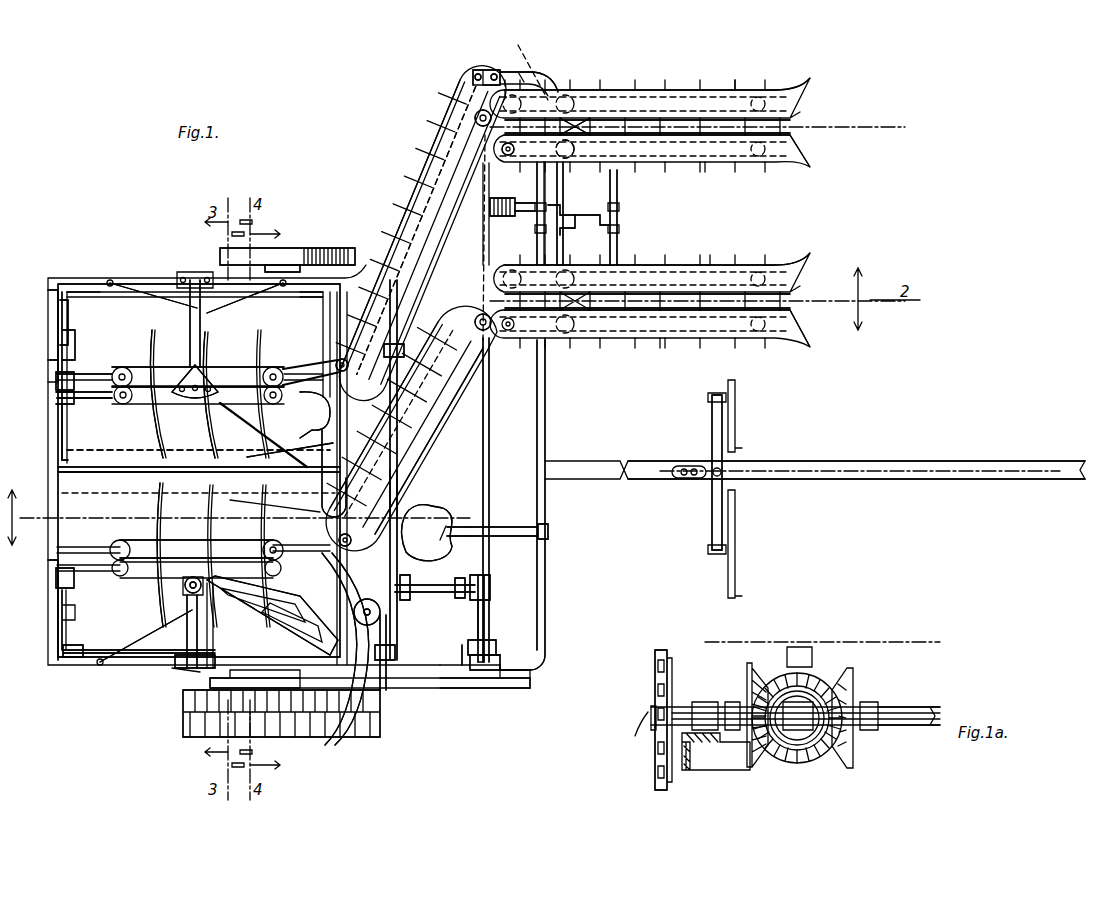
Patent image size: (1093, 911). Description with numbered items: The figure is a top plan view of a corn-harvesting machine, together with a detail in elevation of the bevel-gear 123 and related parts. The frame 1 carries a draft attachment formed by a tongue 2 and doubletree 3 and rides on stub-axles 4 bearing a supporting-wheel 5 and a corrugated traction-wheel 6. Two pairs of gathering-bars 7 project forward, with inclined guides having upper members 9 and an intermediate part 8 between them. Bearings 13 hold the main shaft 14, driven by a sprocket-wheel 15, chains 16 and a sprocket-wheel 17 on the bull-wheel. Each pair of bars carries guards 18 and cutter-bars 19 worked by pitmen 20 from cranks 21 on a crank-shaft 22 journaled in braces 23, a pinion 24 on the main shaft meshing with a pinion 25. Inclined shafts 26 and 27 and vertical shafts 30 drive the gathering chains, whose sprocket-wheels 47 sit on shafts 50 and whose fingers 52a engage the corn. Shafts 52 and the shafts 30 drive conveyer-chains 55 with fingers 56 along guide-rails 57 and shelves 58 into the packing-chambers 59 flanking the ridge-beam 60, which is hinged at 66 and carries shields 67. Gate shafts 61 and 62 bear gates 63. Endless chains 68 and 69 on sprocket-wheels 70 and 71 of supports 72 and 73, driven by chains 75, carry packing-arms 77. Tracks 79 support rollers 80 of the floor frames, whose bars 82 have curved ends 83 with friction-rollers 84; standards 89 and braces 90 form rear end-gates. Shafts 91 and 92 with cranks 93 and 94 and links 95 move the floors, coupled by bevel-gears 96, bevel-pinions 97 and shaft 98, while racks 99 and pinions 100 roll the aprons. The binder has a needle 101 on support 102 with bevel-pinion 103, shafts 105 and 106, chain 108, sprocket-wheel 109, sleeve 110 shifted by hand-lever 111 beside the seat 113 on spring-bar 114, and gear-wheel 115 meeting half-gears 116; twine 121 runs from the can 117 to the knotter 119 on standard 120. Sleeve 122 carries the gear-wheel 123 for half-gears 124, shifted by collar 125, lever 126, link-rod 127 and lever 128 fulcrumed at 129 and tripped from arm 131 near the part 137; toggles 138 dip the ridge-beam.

In FIG. 1, the frame 1 is at (546, 432).
In FIG. 1A, the frame 1 is at (690, 770).
In FIG. 1, the tongue 2 is at (826, 462).
In FIG. 1, the doubletree 3 is at (710, 438).
In FIG. 1, the stub-axles 4 is at (286, 268).
In FIG. 1, the supporting-wheel 5 is at (335, 250).
In FIG. 1, the traction-wheel 6 is at (308, 730).
In FIG. 1, the gathering-bars 7 is at (812, 86).
In FIG. 1, the conveyor frame 8 is at (658, 118).
In FIG. 1, the upper members of inclined guides 9 is at (647, 212).
In FIG. 1, the boxes or bearings 13 is at (488, 70).
In FIG. 1A, the boxes or bearings 13 is at (702, 702).
In FIG. 1, the main shaft 14 is at (490, 462).
In FIG. 1A, the main shaft 14 is at (904, 707).
In FIG. 1, the sprocket-wheel 15 is at (512, 680).
In FIG. 1A, the sprocket-wheel 15 is at (650, 750).
In FIG. 1, the chains 16 is at (500, 688).
In FIG. 1, the sprocket-wheel 17 is at (190, 678).
In FIG. 1, the guards 18 is at (585, 138).
In FIG. 1, the reciprocating cutter-bars 19 is at (516, 149).
In FIG. 1, the pitmen 20 is at (565, 180).
In FIG. 1, the cranks 21 is at (572, 225).
In FIG. 1, the crank-shaft 22 is at (575, 220).
In FIG. 1, the braces 23 is at (618, 192).
In FIG. 1, the pinion 24 is at (500, 198).
In FIG. 1, the pinion 25 is at (502, 218).
In FIG. 1, the inclined shafts 26 is at (552, 85).
In FIG. 1, the inclined shafts 27 is at (570, 160).
In FIG. 1, the vertical shafts 30 is at (472, 116).
In FIG. 1, the sprocket-wheels 47 is at (503, 360).
In FIG. 1, the shafts 50 is at (522, 75).
In FIG. 1, the shafts 52 is at (338, 538).
In FIG. 1, the laterally-extending fingers 52a is at (735, 88).
In FIG. 1, the endless conveyer-chains 55 is at (426, 170).
In FIG. 1, the fingers 56 is at (416, 192).
In FIG. 1, the guide-rails 57 is at (438, 230).
In FIG. 1, the supporting-shelves 58 is at (425, 262).
In FIG. 1, the packing-chambers 59 is at (199, 470).
In FIG. 1, the ridge-beam 60 is at (125, 474).
In FIG. 1, the vertical shaft 61 is at (399, 497).
In FIG. 1, the vertical shaft 62 is at (318, 430).
In FIG. 1, the gates 63 is at (300, 455).
In FIG. 1, the hinge 66 is at (402, 322).
In FIG. 1, the shields 67 is at (180, 484).
In FIG. 1, the endless chains 68 is at (160, 430).
In FIG. 1, the endless chains 69 is at (160, 365).
In FIG. 1, the sprocket-wheels 70 is at (135, 400).
In FIG. 1, the sprocket-wheels 71 is at (124, 367).
In FIG. 1, the vertical supports 72 is at (280, 405).
In FIG. 1, the vertical supports 73 is at (122, 405).
In FIG. 1, the chains 75 is at (290, 510).
In FIG. 1, the pivoted packing-arms 77 is at (100, 395).
In FIG. 1, the tracks 79 is at (55, 300).
In FIG. 1, the rollers or wheels 80 is at (56, 378).
In FIG. 1, the bars 82 is at (60, 410).
In FIG. 1, the downwardly-curved outer ends 83 is at (60, 345).
In FIG. 1, the friction-rollers 84 is at (52, 358).
In FIG. 1, the standards 89 is at (68, 368).
In FIG. 1, the cross pieces or braces 90 is at (62, 452).
In FIG. 1, the shaft 91 is at (108, 648).
In FIG. 1, the shaft 92 is at (125, 300).
In FIG. 1, the cranks 93 is at (70, 310).
In FIG. 1, the cranks 94 is at (330, 318).
In FIG. 1, the links 95 is at (60, 330).
In FIG. 1, the bevel-gears 96 is at (386, 688).
In FIG. 1, the bevel-pinions 97 is at (378, 262).
In FIG. 1, the transversely-disposed shaft 98 is at (400, 548).
In FIG. 1, the toothed bars or racks 99 is at (48, 294).
In FIG. 1, the pinions 100 is at (56, 396).
In FIG. 1, the needle 101 is at (338, 730).
In FIG. 1, the standard or support 102 is at (178, 668).
In FIG. 1, the bevel-pinion 103 is at (184, 590).
In FIG. 1, the shaft 105 is at (300, 605).
In FIG. 1, the shaft 106 is at (440, 582).
In FIG. 1, the chain 108 is at (410, 595).
In FIG. 1, the sprocket-wheel 109 is at (408, 600).
In FIG. 1, the sleeve 110 is at (468, 600).
In FIG. 1, the hand-lever 111 is at (465, 578).
In FIG. 1, the seat 113 is at (450, 527).
In FIG. 1, the spring-bar 114 is at (515, 526).
In FIG. 1, the gear-wheel 115 is at (490, 625).
In FIG. 1, the half-gears 116 is at (490, 580).
In FIG. 1, the twine can or receptacle 117 is at (382, 614).
In FIG. 1, the knotter 119 is at (205, 370).
In FIG. 1, the standard 120 is at (192, 320).
In FIG. 1, the twine 121 is at (222, 412).
In FIG. 1, the slidable sleeve or hub 122 is at (492, 688).
In FIG. 1A, the slidable sleeve or hub 122 is at (785, 762).
In FIG. 1, the gear-wheel 123 is at (470, 638).
In FIG. 1A, the gear-wheel 123 is at (820, 760).
In FIG. 1, the half-gears 124 is at (496, 660).
In FIG. 1A, the half-gears 124 is at (750, 672).
In FIG. 1, the annular collar 125 is at (478, 668).
In FIG. 1, the lever 126 is at (470, 660).
In FIG. 1A, the lever 126 is at (812, 660).
In FIG. 1, the link-rod 127 is at (462, 670).
In FIG. 1, the lever 128 is at (200, 625).
In FIG. 1, the fulcrum 129 is at (170, 672).
In FIG. 1, the arm 131 is at (200, 612).
In FIG. 1, the slot 137 is at (436, 535).
In FIG. 1, the links or toggles 138 is at (320, 484).